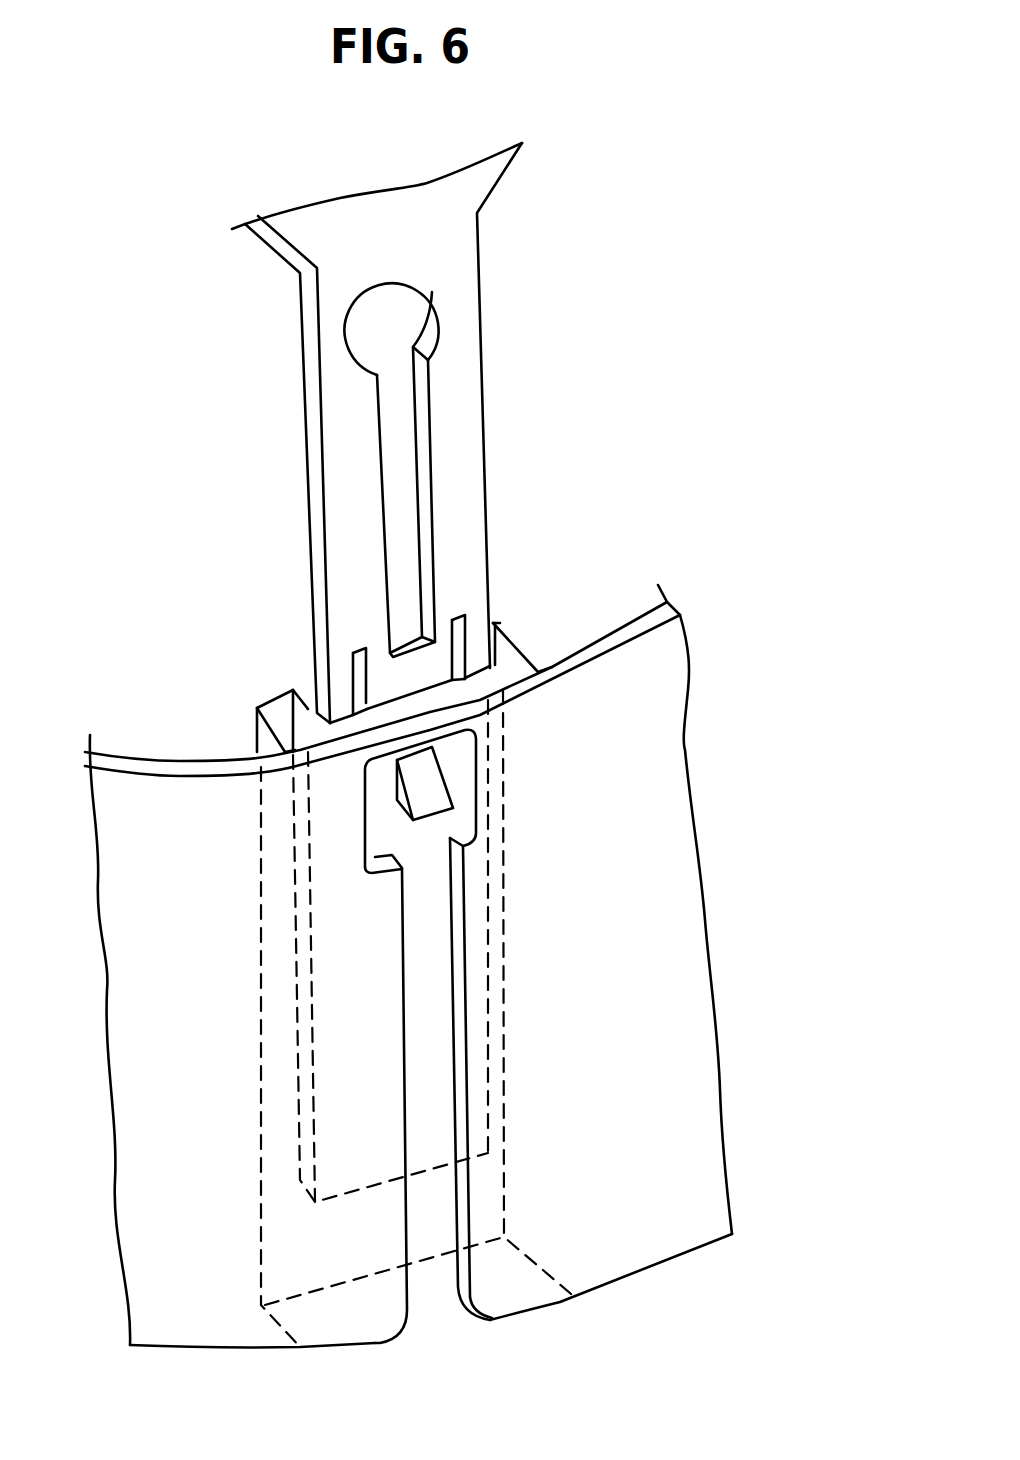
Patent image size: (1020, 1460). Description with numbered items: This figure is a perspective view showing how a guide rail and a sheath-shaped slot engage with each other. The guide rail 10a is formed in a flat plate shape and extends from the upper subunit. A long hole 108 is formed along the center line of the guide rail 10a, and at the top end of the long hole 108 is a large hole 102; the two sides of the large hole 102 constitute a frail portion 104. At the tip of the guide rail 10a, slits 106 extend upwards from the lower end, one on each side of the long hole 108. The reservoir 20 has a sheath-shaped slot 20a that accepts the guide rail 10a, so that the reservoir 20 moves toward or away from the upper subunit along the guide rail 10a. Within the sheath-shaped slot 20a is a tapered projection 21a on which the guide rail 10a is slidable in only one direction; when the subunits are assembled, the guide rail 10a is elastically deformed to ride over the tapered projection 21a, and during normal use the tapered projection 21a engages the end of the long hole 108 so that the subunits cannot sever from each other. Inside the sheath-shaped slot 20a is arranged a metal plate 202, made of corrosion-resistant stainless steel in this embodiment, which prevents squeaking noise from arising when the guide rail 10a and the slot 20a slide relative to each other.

The guide rail 10a is at (463, 483).
The large hole 102 is at (407, 320).
The frail portion 104 is at (465, 368).
The long hole 108 is at (398, 448).
The slits 106 is at (480, 612).
The reservoir 20 is at (631, 1200).
The sheath-shaped slot 20a is at (512, 665).
The tapered projection 21a is at (428, 787).
The metal plate 202 is at (487, 912).